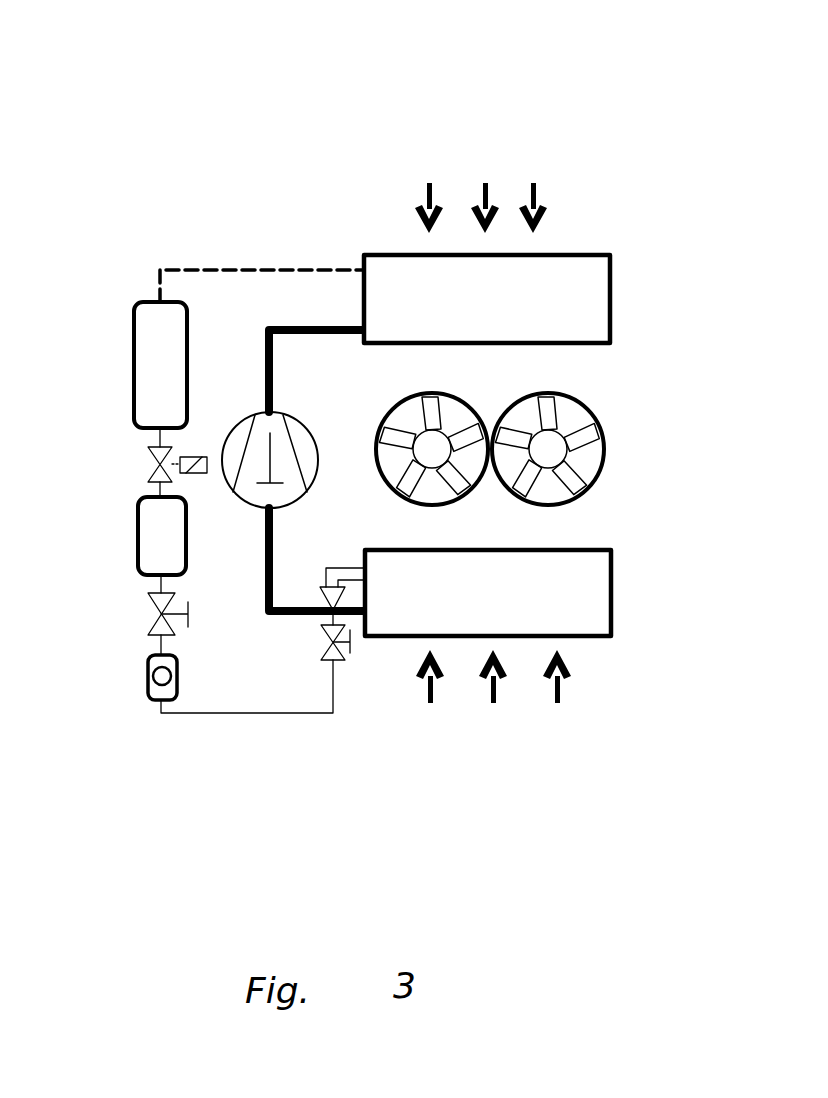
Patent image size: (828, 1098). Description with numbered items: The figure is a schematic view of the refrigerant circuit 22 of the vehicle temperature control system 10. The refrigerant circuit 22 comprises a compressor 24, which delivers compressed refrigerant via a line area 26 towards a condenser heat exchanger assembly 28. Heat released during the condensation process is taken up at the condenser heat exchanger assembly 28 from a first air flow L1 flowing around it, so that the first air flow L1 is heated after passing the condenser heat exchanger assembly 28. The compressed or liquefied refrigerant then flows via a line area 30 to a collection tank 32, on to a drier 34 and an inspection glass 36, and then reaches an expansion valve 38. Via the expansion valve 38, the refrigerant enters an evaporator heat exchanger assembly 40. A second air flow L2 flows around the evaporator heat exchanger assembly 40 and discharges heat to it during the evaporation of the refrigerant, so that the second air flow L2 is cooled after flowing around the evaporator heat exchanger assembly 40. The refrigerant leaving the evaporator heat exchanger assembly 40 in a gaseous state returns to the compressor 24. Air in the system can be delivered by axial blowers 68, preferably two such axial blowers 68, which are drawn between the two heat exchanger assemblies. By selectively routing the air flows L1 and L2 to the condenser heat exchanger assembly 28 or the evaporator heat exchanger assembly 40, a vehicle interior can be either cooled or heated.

The vehicle temperature control system 10 is at (650, 118).
The refrigerant circuit 22 is at (150, 243).
The compressor 24 is at (226, 440).
The line area 26 is at (270, 366).
The condenser heat exchanger assembly 28 is at (612, 285).
The line area 30 is at (208, 268).
The collection tank 32 is at (133, 348).
The drier 34 is at (137, 522).
The inspection glass 36 is at (148, 663).
The expansion valve 38 is at (346, 662).
The evaporator heat exchanger assembly 40 is at (613, 590).
The axial blower 68 is at (455, 500).
The first air flow L1 is at (490, 190).
The second air flow L2 is at (490, 692).